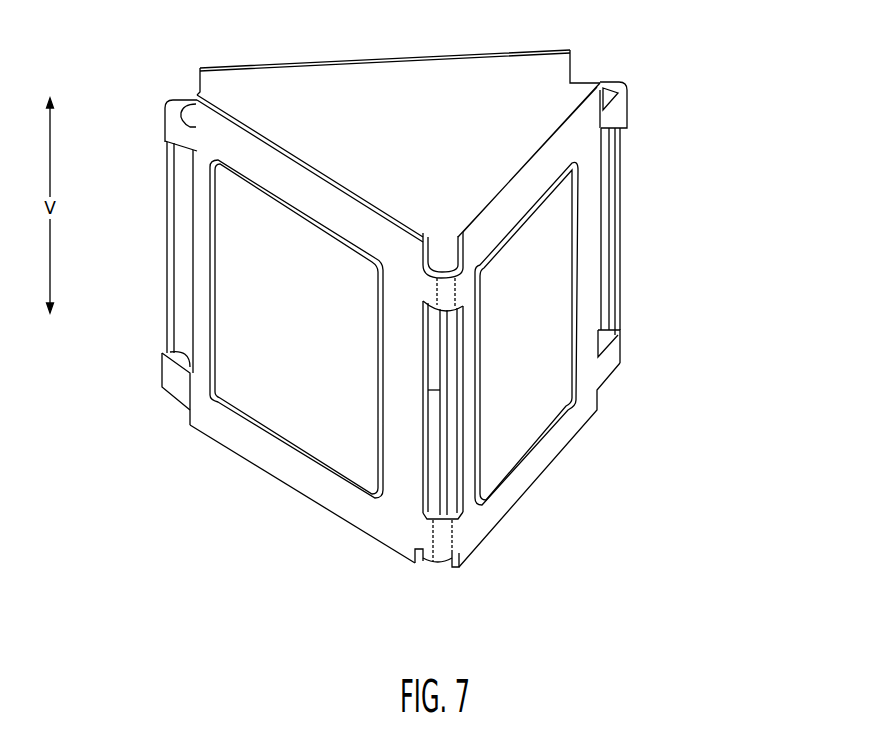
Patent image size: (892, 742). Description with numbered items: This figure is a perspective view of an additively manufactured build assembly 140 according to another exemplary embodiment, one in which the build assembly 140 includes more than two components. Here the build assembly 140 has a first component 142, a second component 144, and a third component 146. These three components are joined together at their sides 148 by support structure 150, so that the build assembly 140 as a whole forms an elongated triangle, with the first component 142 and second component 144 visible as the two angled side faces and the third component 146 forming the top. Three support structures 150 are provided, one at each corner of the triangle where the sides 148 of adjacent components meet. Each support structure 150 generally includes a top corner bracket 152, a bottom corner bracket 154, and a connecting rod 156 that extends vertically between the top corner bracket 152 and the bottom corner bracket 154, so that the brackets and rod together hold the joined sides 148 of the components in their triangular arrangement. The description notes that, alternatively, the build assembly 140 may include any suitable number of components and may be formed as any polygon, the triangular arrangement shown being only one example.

The build assembly 140 is at (746, 120).
The first component 142 is at (319, 337).
The second component 144 is at (547, 337).
The third component 146 is at (437, 134).
The sides 148 is at (190, 292).
The support structure 150 is at (452, 577).
The top corner bracket 152 is at (615, 117).
The bottom corner bracket 154 is at (609, 357).
The connecting rod 156 is at (618, 287).